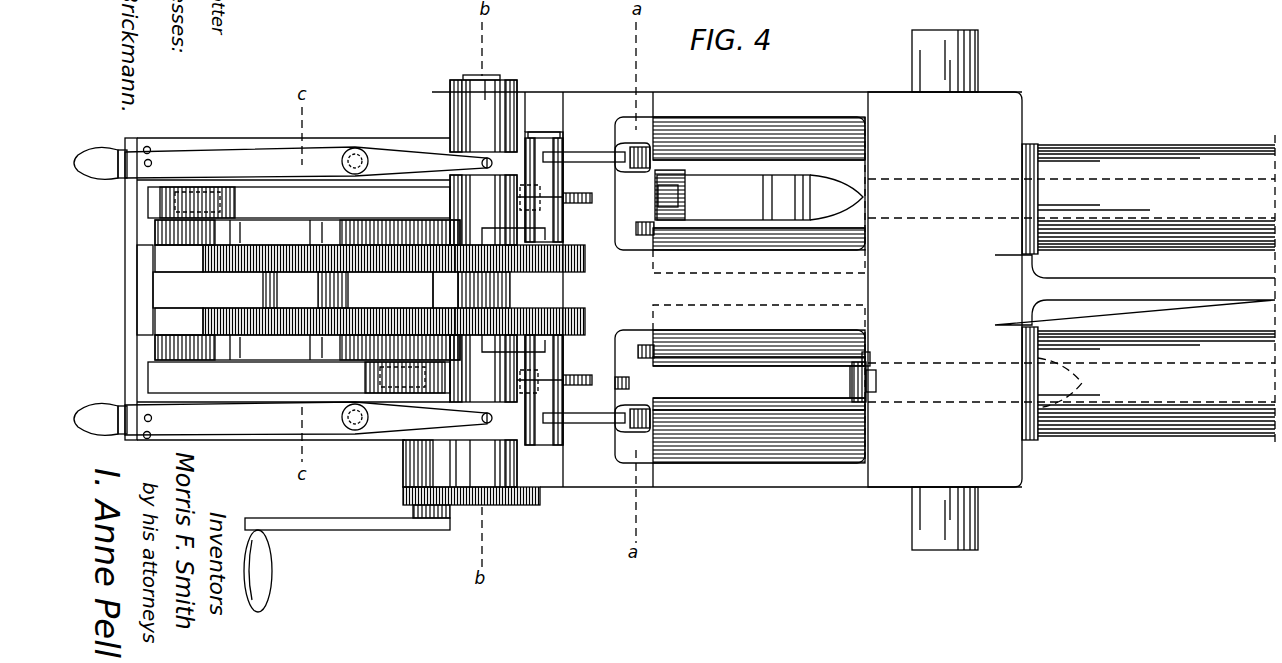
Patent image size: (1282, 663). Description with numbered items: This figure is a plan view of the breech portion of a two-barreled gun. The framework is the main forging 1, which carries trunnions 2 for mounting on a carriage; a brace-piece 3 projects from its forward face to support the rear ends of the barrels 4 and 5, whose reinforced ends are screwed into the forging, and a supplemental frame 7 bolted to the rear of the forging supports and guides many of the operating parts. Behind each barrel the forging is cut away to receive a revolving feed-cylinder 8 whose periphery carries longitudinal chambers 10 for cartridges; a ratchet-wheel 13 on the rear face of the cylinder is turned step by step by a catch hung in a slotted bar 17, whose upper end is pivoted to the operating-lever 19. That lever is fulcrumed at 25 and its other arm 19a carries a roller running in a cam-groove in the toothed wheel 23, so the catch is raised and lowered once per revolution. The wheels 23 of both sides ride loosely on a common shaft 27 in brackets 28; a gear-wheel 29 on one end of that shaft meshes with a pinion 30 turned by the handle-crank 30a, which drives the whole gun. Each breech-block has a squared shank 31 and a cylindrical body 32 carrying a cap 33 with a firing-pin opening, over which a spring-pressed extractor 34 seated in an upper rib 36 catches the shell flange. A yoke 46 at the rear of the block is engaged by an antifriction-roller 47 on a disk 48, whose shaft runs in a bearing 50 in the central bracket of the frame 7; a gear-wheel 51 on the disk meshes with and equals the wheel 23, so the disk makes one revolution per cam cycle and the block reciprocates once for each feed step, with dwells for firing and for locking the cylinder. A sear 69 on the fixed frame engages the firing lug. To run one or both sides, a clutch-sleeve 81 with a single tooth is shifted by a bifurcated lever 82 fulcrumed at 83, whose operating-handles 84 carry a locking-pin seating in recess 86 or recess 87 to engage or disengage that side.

The main forging 1 is at (801, 289).
The trunnions 2 is at (945, 279).
The brace-piece 3 is at (1135, 290).
The barrel 4 is at (1071, 290).
The barrel 5 is at (1071, 383).
The supplemental frame 7 is at (125, 286).
The revolving feed-cylinder 8 is at (792, 122).
The longitudinal chambers 10 is at (759, 290).
The ratchet-wheel 13 is at (644, 232).
The slotted bar 17 is at (616, 160).
The operating-lever 19 is at (590, 150).
The lever arm 19a is at (489, 288).
The toothed wheel 23 is at (532, 290).
The fulcrum 25 is at (578, 352).
The common shaft 27 is at (490, 76).
The brackets 28 is at (460, 283).
The gear-wheel 29 is at (459, 516).
The pinion 30 is at (403, 495).
The handle-crank 30a is at (347, 565).
The squared shank 31 is at (629, 391).
The cylindrical body 32 is at (653, 214).
The cap 33 is at (868, 358).
The extractor 34 is at (668, 196).
The upper rib 36 is at (759, 382).
The yoke 46 is at (237, 197).
The antifriction-roller 47 is at (302, 290).
The disk 48 is at (307, 290).
The bearing 50 is at (293, 290).
The gear-wheel 51 is at (203, 259).
The sear 69 is at (590, 199).
The clutch-sleeve 81 is at (470, 157).
The bifurcated lever 82 is at (306, 291).
The fulcrum 83 is at (355, 148).
The operating-handle 84 is at (98, 155).
The recess 86 is at (150, 147).
The recess 87 is at (152, 163).